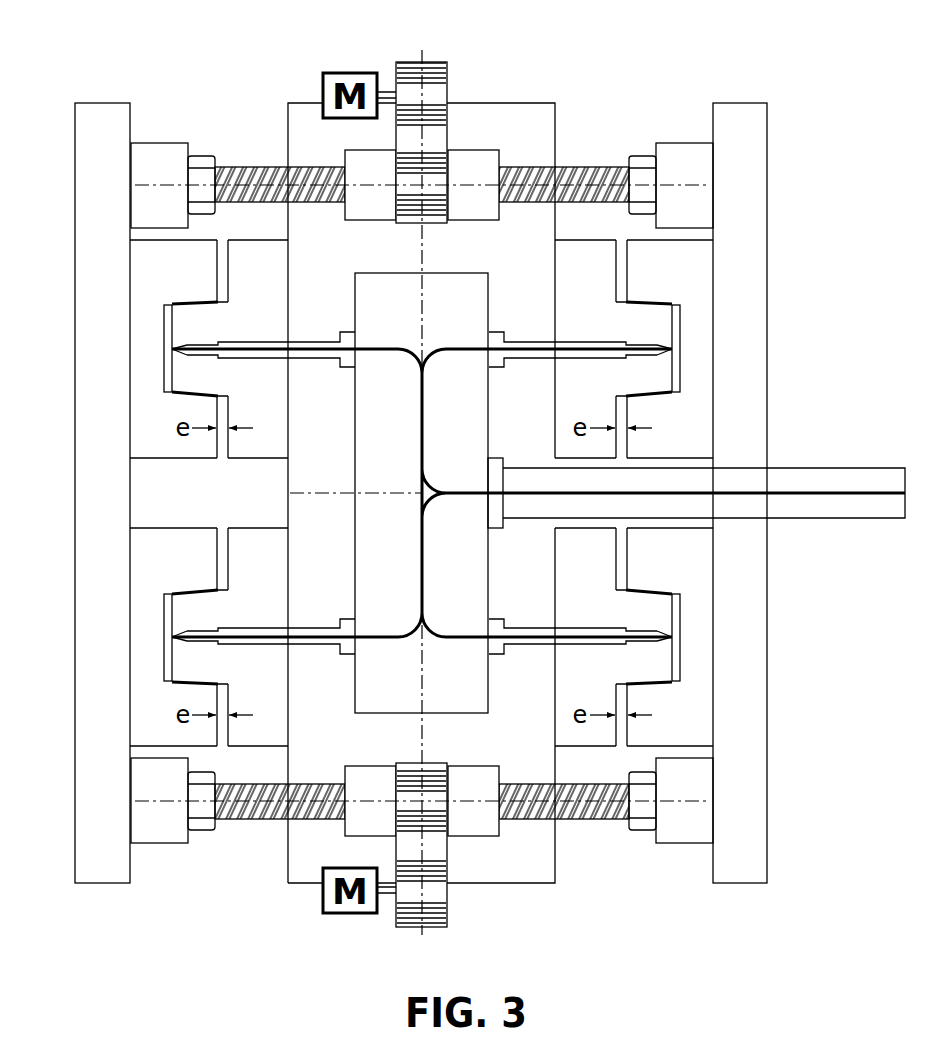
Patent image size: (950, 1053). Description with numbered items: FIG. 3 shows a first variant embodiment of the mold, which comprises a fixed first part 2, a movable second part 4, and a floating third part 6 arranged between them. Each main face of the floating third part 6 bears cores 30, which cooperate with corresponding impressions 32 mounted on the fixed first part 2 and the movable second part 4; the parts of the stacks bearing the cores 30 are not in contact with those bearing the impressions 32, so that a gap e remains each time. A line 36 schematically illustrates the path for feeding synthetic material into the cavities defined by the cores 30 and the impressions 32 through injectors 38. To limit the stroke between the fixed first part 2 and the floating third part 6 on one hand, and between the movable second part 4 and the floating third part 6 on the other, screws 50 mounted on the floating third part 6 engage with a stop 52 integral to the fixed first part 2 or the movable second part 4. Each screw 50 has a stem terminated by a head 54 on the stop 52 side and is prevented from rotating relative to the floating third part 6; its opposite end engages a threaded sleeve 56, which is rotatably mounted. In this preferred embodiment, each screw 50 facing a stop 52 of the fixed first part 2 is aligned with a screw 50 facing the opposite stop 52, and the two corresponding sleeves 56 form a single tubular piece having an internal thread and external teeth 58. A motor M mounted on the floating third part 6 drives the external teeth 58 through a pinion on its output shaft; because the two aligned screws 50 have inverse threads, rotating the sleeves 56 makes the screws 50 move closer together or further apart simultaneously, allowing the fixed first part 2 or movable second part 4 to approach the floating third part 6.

The fixed first part 2 is at (740, 88).
The movable second part 4 is at (102, 92).
The floating third part 6 is at (505, 903).
The core 30 is at (198, 373).
The impression 32 is at (168, 305).
The line 36 is at (453, 635).
The injector 38 is at (172, 350).
The screw 50 is at (243, 182).
The stop 52 is at (157, 153).
The head 54 is at (200, 162).
The threaded sleeve 56 is at (370, 203).
The external teeth 58 is at (420, 72).